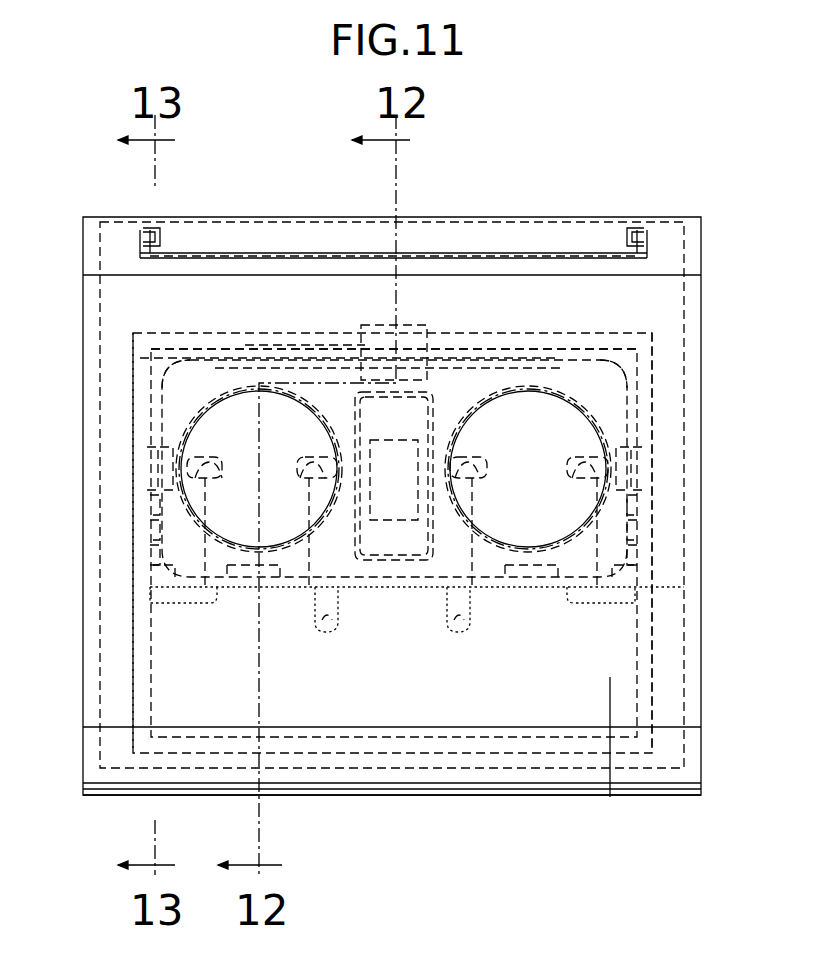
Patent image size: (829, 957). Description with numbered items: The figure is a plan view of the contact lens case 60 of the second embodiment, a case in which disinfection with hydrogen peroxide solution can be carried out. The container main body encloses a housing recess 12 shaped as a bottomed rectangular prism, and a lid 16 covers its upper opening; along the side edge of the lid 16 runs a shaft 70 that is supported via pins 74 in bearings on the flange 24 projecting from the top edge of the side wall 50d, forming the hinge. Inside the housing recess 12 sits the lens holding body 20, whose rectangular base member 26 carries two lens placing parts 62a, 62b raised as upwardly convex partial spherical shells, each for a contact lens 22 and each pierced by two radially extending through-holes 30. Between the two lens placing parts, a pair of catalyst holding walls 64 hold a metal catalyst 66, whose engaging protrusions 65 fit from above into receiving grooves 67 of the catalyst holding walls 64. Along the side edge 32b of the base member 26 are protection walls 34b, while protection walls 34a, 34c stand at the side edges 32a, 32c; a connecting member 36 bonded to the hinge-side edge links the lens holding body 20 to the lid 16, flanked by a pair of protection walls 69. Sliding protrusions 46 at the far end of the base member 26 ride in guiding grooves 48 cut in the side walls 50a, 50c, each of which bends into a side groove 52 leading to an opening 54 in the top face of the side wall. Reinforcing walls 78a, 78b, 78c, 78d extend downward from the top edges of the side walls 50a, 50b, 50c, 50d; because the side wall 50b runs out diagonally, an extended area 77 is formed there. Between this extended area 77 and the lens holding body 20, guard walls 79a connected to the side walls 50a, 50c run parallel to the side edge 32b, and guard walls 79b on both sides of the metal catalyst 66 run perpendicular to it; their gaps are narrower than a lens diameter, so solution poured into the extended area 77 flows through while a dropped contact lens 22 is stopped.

The housing recess 12 is at (648, 345).
The lid 16 is at (665, 300).
The lens holding body 20 is at (175, 368).
The contact lens 22 is at (205, 400).
The flange 24 is at (605, 310).
The base member 26 is at (205, 425).
The through-hole 30 is at (205, 590).
The side edge 32a is at (160, 478).
The side edge 32b is at (495, 577).
The side edge 32c is at (630, 410).
The protection wall 34a is at (165, 462).
The protection wall 34b is at (242, 577).
The protection wall 34c is at (610, 460).
The connecting member 36 is at (375, 385).
The sliding protrusion 46 is at (168, 577).
The guiding groove 48 is at (158, 560).
The side wall 50a is at (165, 430).
The side wall 50b is at (612, 677).
The side wall 50c is at (640, 390).
The side wall 50d is at (250, 370).
The side groove 52 is at (165, 535).
The opening 54 is at (160, 505).
The contact lens case 60 is at (672, 96).
The lens placing part 62a is at (215, 398).
The lens placing part 62b is at (535, 400).
The catalyst holding wall 64 is at (330, 465).
The engaging protrusion 65 is at (380, 500).
The metal catalyst 66 is at (405, 420).
The receiving groove 67 is at (358, 480).
The protection wall 69 is at (300, 460).
The shaft 70 is at (120, 250).
The pin 74 is at (150, 240).
The extended area 77 is at (280, 652).
The reinforcing wall 78a is at (150, 360).
The reinforcing wall 78b is at (140, 778).
The reinforcing wall 78c is at (690, 440).
The reinforcing wall 78d is at (500, 360).
The guard wall 79a is at (180, 603).
The guard wall 79b is at (328, 635).